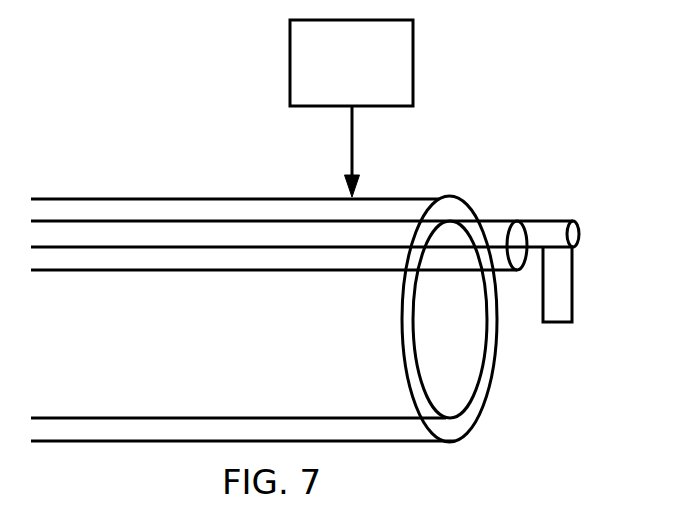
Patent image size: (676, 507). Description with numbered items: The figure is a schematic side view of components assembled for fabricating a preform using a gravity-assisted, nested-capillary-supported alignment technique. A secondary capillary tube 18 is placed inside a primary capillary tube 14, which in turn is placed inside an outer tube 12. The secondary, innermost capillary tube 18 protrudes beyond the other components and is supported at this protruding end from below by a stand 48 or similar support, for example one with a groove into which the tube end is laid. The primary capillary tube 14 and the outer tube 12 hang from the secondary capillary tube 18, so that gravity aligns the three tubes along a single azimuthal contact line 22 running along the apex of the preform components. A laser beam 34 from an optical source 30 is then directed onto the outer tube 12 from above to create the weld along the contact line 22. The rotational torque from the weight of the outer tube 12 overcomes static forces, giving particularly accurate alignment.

The outer tube 12 is at (468, 416).
The primary capillary tube 14 is at (493, 272).
The secondary capillary tube 18 is at (557, 220).
The azimuthal contact line 22 is at (120, 220).
The optical source 30 is at (335, 77).
The laser beam 34 is at (353, 160).
The stand 48 is at (572, 303).